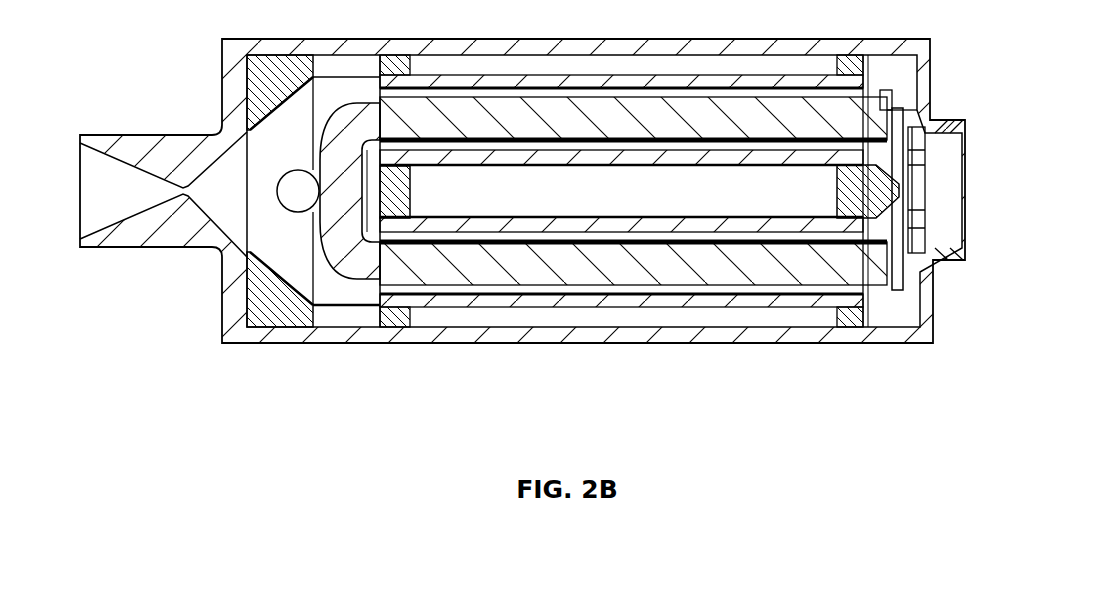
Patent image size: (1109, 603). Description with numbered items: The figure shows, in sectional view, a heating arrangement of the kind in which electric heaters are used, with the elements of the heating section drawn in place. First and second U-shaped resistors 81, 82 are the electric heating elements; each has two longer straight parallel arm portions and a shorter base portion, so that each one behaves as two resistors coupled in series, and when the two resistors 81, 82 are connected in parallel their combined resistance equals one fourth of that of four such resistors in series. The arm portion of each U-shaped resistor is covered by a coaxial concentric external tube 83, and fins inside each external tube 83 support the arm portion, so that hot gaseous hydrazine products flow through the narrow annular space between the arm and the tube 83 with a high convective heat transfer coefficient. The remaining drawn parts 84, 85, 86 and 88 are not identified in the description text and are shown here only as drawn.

The U-shaped resistor 81 is at (283, 206).
The U-shaped resistor 82 is at (352, 276).
The external tube 83 is at (667, 298).
The filler block 84 is at (282, 298).
The plunger 85 is at (862, 195).
The terminal pin 86 is at (893, 290).
The armature 88 is at (383, 222).